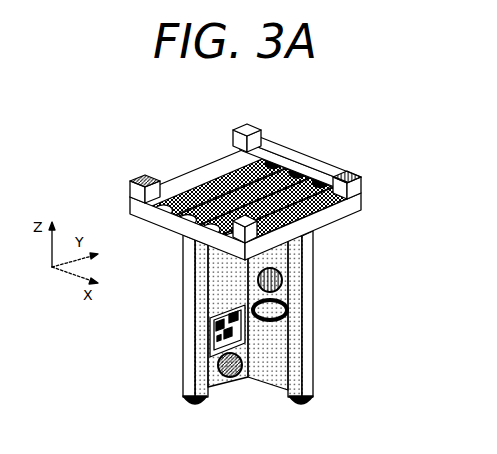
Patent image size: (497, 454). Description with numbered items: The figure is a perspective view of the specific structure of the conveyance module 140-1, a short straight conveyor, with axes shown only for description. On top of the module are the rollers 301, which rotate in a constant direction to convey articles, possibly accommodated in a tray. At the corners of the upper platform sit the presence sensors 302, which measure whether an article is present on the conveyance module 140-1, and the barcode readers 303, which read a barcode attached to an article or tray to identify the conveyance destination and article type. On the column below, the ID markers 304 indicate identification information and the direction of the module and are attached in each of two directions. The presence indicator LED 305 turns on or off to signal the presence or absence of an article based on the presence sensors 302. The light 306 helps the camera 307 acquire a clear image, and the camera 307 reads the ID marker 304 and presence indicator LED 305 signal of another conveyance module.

The conveyance module 140-1 is at (254, 263).
The rollers 301 is at (253, 188).
The presence sensors 302 is at (239, 178).
The barcode readers 303 is at (292, 179).
The ID markers 304 is at (191, 331).
The presence indicator LED 305 is at (242, 385).
The light 306 is at (308, 285).
The camera 307 is at (306, 320).